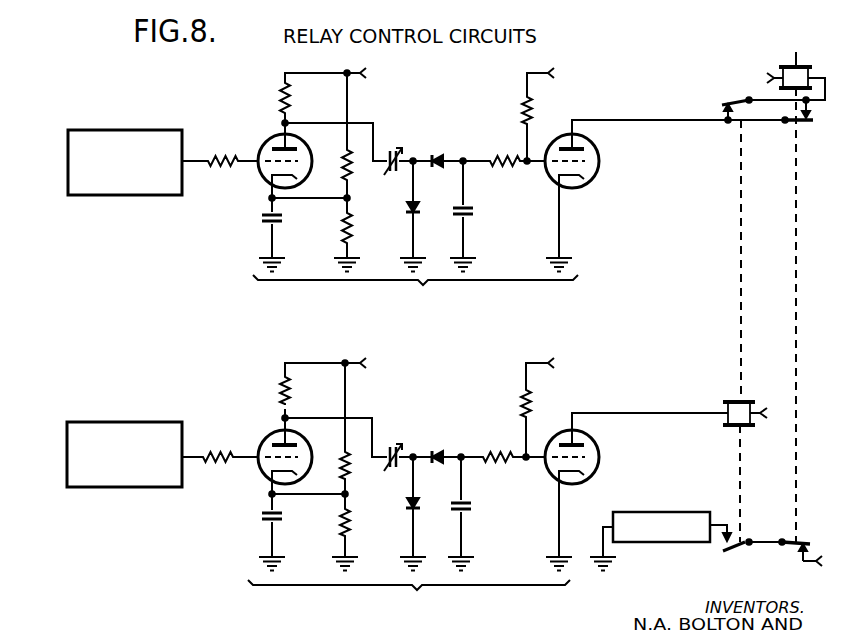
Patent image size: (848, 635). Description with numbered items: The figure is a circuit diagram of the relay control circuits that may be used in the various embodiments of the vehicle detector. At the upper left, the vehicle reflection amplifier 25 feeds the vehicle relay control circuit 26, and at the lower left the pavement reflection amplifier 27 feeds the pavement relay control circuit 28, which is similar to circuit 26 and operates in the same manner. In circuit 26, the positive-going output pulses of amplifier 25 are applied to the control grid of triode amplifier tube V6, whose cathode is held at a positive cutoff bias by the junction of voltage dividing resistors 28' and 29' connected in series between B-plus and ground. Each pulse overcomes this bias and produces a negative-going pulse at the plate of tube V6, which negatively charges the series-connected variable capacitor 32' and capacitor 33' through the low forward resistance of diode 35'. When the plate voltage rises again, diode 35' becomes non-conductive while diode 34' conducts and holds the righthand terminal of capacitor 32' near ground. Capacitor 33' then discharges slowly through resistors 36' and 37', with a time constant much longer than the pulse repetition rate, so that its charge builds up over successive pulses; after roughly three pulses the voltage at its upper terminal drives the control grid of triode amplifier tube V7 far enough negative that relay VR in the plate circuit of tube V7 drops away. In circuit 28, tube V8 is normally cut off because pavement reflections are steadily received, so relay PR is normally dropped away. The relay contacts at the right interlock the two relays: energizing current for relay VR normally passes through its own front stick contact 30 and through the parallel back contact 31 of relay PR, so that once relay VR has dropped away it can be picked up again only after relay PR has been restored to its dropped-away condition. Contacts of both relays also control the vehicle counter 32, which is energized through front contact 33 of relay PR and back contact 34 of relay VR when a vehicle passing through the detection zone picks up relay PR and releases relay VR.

The vehicle reflection amplifier 25 is at (116, 131).
The pavement reflection amplifier 27 is at (128, 423).
The vehicle relay control circuit 26 is at (497, 195).
The pavement relay control circuit 28 is at (455, 493).
The triode amplifier tube V6 is at (273, 138).
The triode amplifier tube V7 is at (598, 152).
The tube V8 is at (268, 432).
The voltage dividing resistor 28' is at (331, 169).
The voltage dividing resistor 29' is at (329, 228).
The variable capacitor 32' is at (398, 148).
The capacitor 33' is at (479, 205).
The diode 34' is at (396, 202).
The diode 35' is at (440, 144).
The resistor 36' is at (501, 144).
The resistor 37' is at (547, 109).
The vehicle relay VR is at (778, 288).
The pavement relay PR is at (759, 331).
The front stick contact 30 is at (803, 123).
The back contact 31 is at (729, 102).
The vehicle counter 32 is at (660, 530).
The front contact 33 is at (752, 554).
The back contact 34 is at (811, 544).